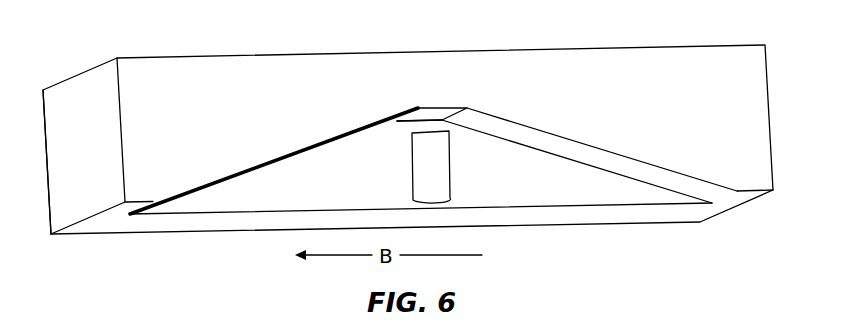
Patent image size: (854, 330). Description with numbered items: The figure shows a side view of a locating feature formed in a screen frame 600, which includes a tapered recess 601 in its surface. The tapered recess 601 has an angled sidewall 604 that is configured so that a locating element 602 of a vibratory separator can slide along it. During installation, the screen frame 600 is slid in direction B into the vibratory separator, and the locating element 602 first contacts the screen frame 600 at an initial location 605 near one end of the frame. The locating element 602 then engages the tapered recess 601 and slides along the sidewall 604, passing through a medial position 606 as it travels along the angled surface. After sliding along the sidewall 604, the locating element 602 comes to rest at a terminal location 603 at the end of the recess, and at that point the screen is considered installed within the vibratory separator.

The screen frame 600 is at (250, 42).
The tapered recess 601 is at (530, 185).
The locating element 602 is at (426, 167).
The terminal location 603 is at (436, 109).
The angled sidewall 604 is at (310, 152).
The initial location 605 is at (108, 224).
The medial position 606 is at (238, 173).